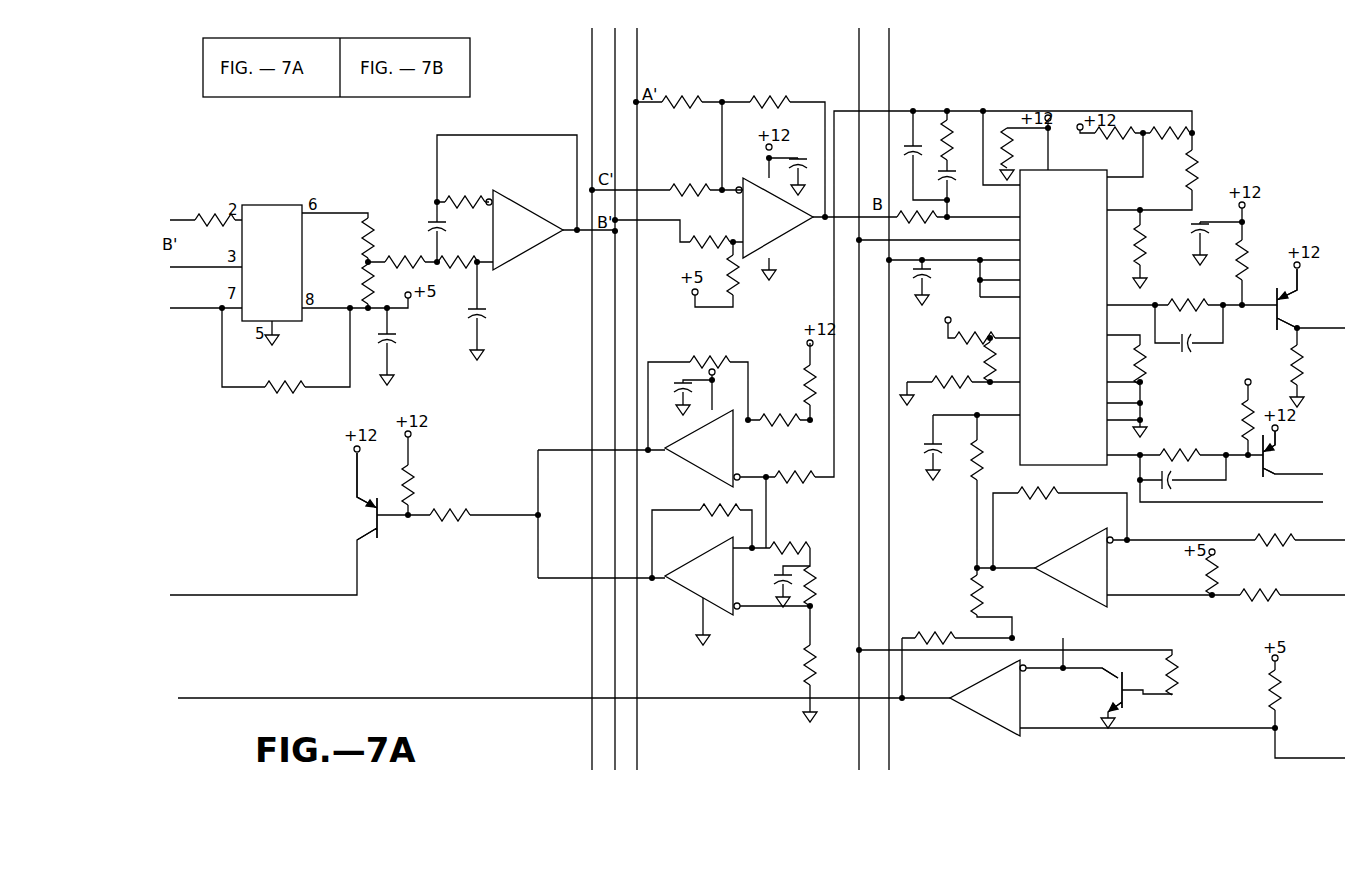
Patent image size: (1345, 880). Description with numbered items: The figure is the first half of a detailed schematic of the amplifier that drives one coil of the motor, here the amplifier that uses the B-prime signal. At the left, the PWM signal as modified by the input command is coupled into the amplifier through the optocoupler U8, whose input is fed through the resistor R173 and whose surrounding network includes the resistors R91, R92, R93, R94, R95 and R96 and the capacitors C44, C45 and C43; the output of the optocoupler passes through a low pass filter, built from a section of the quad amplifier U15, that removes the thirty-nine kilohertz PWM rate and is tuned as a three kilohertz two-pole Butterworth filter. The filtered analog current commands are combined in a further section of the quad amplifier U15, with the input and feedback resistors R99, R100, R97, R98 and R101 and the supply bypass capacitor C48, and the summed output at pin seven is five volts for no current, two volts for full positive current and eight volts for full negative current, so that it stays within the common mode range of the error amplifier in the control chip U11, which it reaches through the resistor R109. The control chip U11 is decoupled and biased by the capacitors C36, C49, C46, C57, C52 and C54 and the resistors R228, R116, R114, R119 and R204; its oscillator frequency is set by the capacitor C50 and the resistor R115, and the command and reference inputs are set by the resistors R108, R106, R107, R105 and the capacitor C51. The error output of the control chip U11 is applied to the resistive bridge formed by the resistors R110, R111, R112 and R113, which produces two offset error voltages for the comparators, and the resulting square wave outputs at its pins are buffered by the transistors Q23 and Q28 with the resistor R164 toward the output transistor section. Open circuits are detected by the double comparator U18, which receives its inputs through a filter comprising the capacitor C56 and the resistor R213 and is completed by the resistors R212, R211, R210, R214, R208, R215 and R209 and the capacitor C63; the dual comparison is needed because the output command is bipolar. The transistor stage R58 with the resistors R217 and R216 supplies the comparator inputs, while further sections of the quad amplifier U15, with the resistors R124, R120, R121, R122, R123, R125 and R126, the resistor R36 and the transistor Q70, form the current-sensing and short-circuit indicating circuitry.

The optocoupler U8 is at (408, 252).
The resistor 270 ohm R173 is at (206, 221).
The resistor 5.1K R91 is at (286, 361).
The resistor 178 ohm R92 is at (365, 238).
The resistor 332 ohm R93 is at (367, 284).
The resistor 68K R94 is at (399, 264).
The resistor 8.4K R95 is at (457, 264).
The resistor 68K R96 is at (466, 201).
The capacitor .01 C44 is at (419, 224).
The capacitor .001 C45 is at (496, 329).
The capacitor .1 C43 is at (405, 353).
The quad amplifier U15 is at (929, 450).
The resistor 20K R99 is at (682, 104).
The resistor 10K R100 is at (767, 103).
The resistor 20K R97 is at (690, 173).
The resistor 10K R98 is at (710, 225).
The resistor 10K R101 is at (753, 284).
The capacitor .1 C48 is at (808, 167).
The resistor 5.1K R109 is at (935, 226).
The double comparator U18 is at (703, 507).
The resistor 10M R212 is at (706, 345).
The capacitor .1 C63 is at (671, 392).
The resistor R211 is at (777, 411).
The resistor 4.99K R210 is at (784, 378).
The resistor R213 is at (796, 477).
The resistor 10K R214 is at (785, 533).
The capacitor C56 is at (766, 581).
The resistor 12.1K R208 is at (833, 584).
The resistor 10M R215 is at (715, 508).
The resistor 4.99K R209 is at (786, 678).
The transistor (labeled R58) R58 is at (351, 496).
The resistor 1K R217 is at (430, 479).
The resistor 10K R216 is at (446, 517).
The control chip U11 is at (1072, 309).
The capacitor 100 C36 is at (906, 147).
The resistor 82K R228 is at (948, 136).
The capacitor .001 C49 is at (962, 183).
The capacitor .01 C46 is at (998, 145).
The resistor R111 is at (1117, 151).
The resistor R110 is at (1171, 135).
The resistor R112 is at (1213, 170).
The resistor R113 is at (1128, 253).
The capacitor .1 C57 is at (1181, 242).
The resistor 2.4K R116 is at (1262, 254).
The resistor 10K R114 is at (1185, 290).
The capacitor C52 is at (1201, 339).
The resistor R115 is at (1159, 365).
The resistor 10K R119 is at (1178, 438).
The capacitor 100 C54 is at (1185, 480).
The resistor 2.4K R204 is at (1224, 416).
The transistor Q28 is at (1285, 454).
The transistor Q23 is at (1301, 299).
The resistor 1K R164 is at (1317, 376).
The capacitor C50 is at (944, 281).
The resistor 7.5K R108 is at (976, 323).
The resistor 4.99K R106 is at (968, 362).
The resistor 7.5K R107 is at (946, 396).
The capacitor 100 C51 is at (916, 454).
The resistor 5.1K R105 is at (996, 460).
The resistor 4.99K R124 is at (972, 594).
The resistor 10K R120 is at (1036, 494).
The resistor 2K R121 is at (1272, 539).
The resistor 10K R122 is at (1216, 575).
The resistor 2K R123 is at (1259, 614).
The resistor 10K R125 is at (930, 622).
The resistor 10K R126 is at (1297, 689).
The resistor 62K R36 is at (1187, 673).
The transistor Q70 is at (1096, 690).